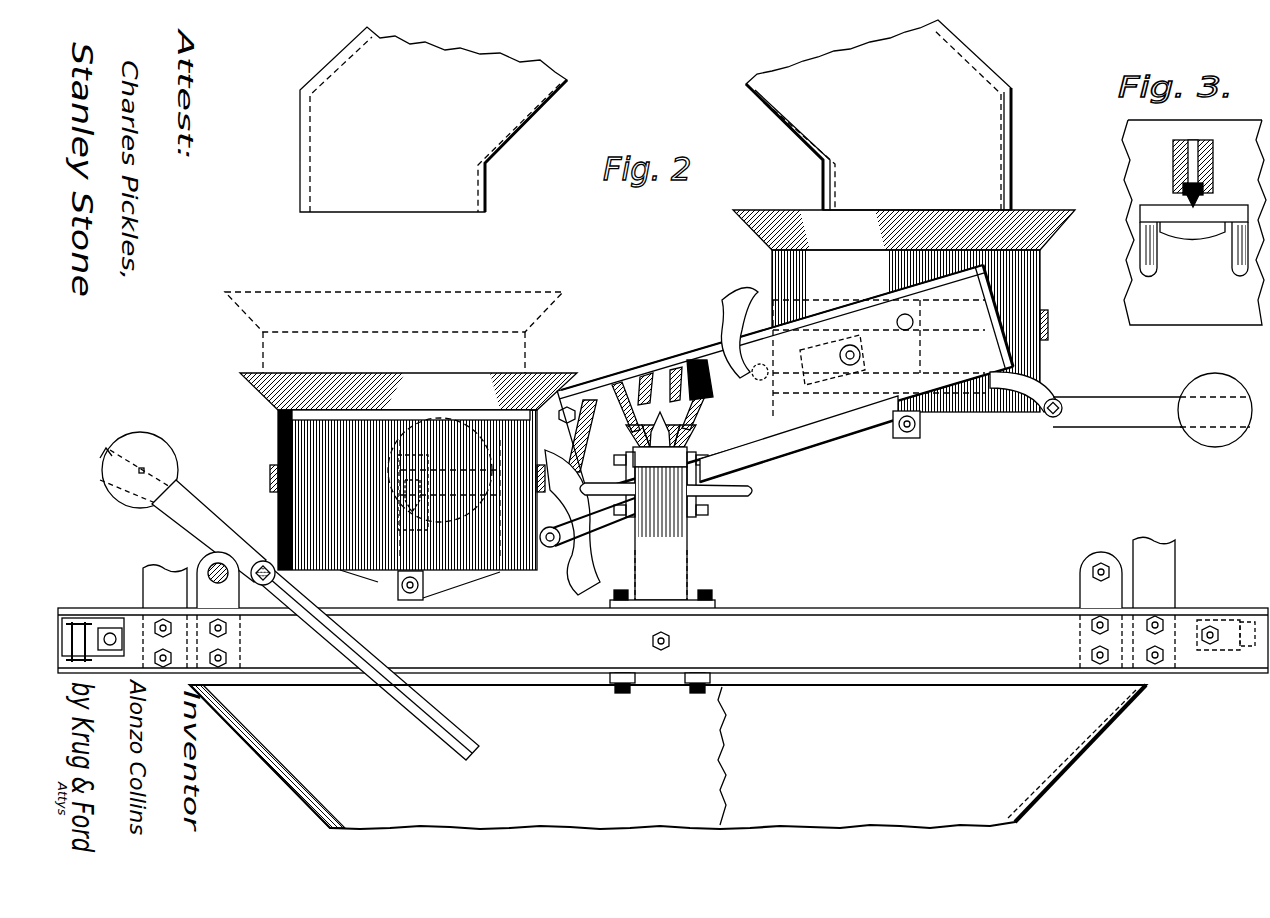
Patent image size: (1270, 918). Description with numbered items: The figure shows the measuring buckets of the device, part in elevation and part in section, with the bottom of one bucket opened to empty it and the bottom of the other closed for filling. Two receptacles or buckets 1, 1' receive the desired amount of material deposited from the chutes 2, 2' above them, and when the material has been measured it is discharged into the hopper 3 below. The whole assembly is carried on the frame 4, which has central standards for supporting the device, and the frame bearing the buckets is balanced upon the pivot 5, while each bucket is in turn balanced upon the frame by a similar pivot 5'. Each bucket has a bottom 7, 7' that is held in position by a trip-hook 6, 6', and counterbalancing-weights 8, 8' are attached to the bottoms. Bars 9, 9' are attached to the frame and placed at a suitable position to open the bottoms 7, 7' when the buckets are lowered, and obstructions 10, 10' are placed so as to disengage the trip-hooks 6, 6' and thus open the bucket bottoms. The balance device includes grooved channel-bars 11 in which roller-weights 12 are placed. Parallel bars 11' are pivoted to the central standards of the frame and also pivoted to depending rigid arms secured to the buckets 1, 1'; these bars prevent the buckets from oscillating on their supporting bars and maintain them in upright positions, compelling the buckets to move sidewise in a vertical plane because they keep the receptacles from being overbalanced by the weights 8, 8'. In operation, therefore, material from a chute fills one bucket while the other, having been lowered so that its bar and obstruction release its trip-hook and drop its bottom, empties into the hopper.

In FIG. 2, the receptacle or bucket 1 is at (401, 431).
In FIG. 2, the receptacle or bucket 1' is at (904, 311).
In FIG. 2, the chute 2 is at (433, 119).
In FIG. 2, the chute 2' is at (878, 115).
In FIG. 2, the hopper 3 is at (668, 757).
In FIG. 2, the frame 4 is at (663, 650).
In FIG. 2, the pivot 5 is at (661, 424).
In FIG. 2, the pivot 5' is at (429, 498).
In FIG. 3, the pivot 5' is at (1212, 193).
In FIG. 2, the trip-hook 6 is at (570, 522).
In FIG. 2, the trip-hook 6' is at (732, 334).
In FIG. 2, the bucket bottom 7 is at (315, 620).
In FIG. 2, the bucket bottom 7' is at (1120, 399).
In FIG. 2, the counterbalancing-weight 8 is at (139, 470).
In FIG. 2, the counterbalancing-weight 8' is at (1215, 410).
In FIG. 2, the bar 9 is at (191, 581).
In FIG. 2, the bar 9' is at (1127, 573).
In FIG. 2, the obstruction 10 is at (594, 522).
In FIG. 2, the obstruction 10' is at (684, 497).
In FIG. 2, the grooved channel-bar 11 is at (734, 379).
In FIG. 2, the parallel bar 11' is at (799, 439).
In FIG. 2, the roller-weight 12 is at (408, 484).